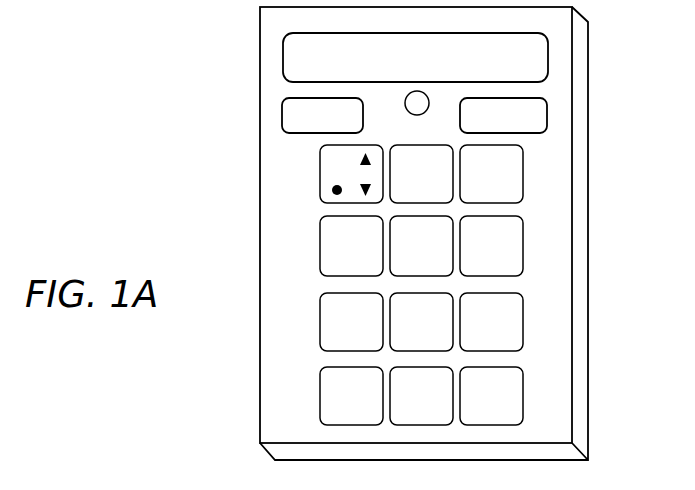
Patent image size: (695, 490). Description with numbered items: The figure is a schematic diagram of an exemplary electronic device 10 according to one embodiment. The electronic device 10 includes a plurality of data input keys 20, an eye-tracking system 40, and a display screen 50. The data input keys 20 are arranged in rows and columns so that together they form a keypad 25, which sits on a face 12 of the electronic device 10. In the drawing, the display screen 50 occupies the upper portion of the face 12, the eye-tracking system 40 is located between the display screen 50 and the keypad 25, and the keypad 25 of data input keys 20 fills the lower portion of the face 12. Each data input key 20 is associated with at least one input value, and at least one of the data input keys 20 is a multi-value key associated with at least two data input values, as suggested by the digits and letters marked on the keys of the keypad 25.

The electronic device 10 is at (226, 246).
The face 12 is at (560, 345).
The data input keys 20 is at (310, 145).
The keypad 25 is at (552, 208).
The eye-tracking system 40 is at (414, 108).
The display screen 50 is at (283, 57).